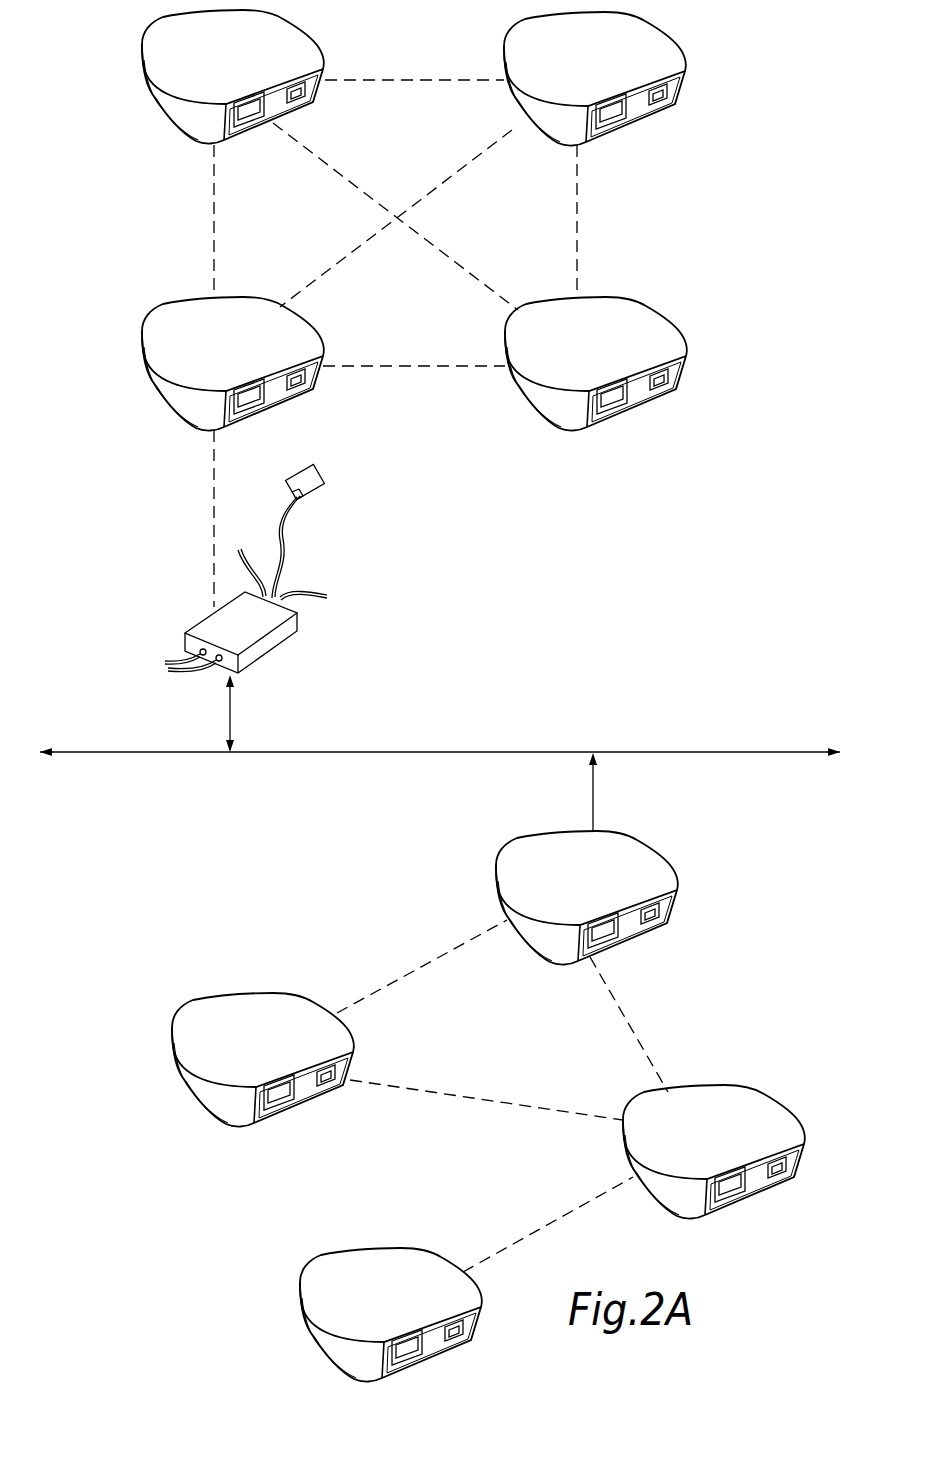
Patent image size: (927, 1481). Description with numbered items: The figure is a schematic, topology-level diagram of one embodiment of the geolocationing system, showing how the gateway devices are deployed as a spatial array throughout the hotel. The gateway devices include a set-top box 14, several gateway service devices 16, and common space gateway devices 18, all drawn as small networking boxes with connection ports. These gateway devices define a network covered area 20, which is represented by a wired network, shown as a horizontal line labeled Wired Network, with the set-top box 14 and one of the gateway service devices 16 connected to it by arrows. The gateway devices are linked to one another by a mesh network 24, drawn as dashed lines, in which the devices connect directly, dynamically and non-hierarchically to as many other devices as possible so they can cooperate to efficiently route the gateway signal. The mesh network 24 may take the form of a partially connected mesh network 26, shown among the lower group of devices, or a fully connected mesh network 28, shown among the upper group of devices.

The set-top box 14 is at (206, 609).
The gateway service device 16 is at (155, 42).
The common space gateway device 18 is at (660, 42).
The network covered area 20 is at (262, 727).
The mesh network 24 is at (578, 236).
The partially connected mesh network 26 is at (410, 968).
The fully connected mesh network 28 is at (412, 368).